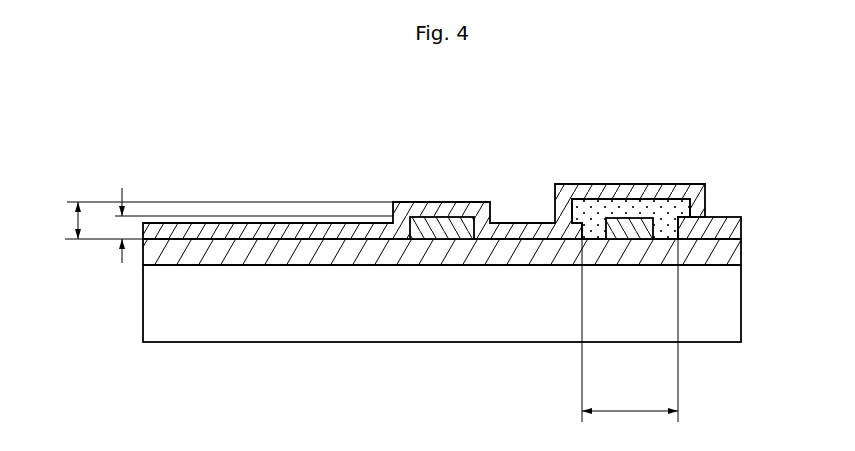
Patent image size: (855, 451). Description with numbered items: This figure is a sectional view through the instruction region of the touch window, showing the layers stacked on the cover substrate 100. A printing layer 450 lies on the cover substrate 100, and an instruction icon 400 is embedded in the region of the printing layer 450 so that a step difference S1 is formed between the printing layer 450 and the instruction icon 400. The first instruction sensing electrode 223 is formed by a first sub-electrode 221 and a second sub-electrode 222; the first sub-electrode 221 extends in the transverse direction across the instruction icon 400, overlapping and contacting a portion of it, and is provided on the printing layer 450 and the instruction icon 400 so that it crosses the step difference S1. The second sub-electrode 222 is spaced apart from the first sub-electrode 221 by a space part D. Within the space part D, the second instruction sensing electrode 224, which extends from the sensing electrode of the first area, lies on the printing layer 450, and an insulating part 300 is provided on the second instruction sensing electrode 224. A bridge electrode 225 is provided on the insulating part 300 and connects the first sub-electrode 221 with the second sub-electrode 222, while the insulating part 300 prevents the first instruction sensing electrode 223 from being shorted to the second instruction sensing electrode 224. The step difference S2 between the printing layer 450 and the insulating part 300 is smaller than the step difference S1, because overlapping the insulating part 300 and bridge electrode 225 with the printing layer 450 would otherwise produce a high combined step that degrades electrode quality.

The cover substrate 100 is at (737, 298).
The printing layer 450 is at (737, 249).
The first sub-electrode 221 is at (424, 185).
The second sub-electrode 222 is at (715, 186).
The first instruction sensing electrode 223 is at (522, 120).
The second instruction sensing electrode 224 is at (620, 240).
The bridge electrode 225 is at (631, 181).
The insulating part 300 is at (667, 240).
The instruction icon 400 is at (438, 222).
The space part D is at (630, 338).
The step difference S1 is at (242, 225).
The step difference S2 is at (218, 220).